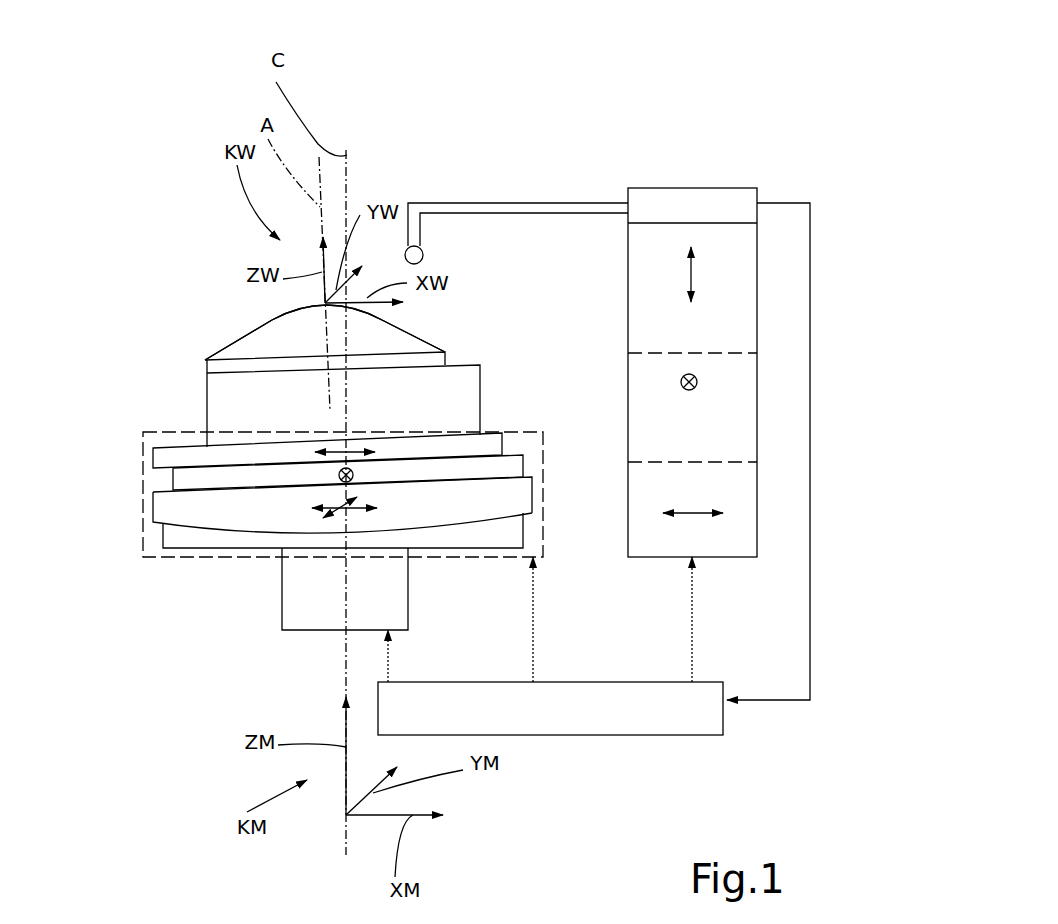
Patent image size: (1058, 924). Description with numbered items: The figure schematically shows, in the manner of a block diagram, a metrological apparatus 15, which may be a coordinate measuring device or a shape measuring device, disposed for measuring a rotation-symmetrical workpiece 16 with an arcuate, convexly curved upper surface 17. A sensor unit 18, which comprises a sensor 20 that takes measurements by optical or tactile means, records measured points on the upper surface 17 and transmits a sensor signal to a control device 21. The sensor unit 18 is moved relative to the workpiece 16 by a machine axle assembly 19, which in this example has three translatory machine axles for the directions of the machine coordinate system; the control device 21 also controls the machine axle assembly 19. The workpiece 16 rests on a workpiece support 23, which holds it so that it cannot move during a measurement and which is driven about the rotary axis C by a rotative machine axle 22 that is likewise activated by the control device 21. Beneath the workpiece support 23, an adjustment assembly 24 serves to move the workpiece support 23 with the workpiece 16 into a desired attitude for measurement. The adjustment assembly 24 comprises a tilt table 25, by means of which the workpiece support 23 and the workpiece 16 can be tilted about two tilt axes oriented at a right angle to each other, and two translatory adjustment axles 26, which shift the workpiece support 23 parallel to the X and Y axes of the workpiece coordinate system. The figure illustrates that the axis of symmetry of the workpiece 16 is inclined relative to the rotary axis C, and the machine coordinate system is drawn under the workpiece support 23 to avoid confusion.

The metrological apparatus 15 is at (784, 122).
The workpiece 16 is at (206, 360).
The upper surface 17 is at (243, 325).
The sensor unit 18 is at (395, 193).
The machine axle assembly 19 is at (758, 563).
The sensor 20 is at (423, 256).
The control device 21 is at (640, 725).
The rotative machine axle 22 is at (285, 590).
The workpiece support 23 is at (213, 400).
The adjustment assembly 24 is at (153, 557).
The tilt table 25 is at (167, 523).
The translatory adjustment axles 26 is at (188, 485).